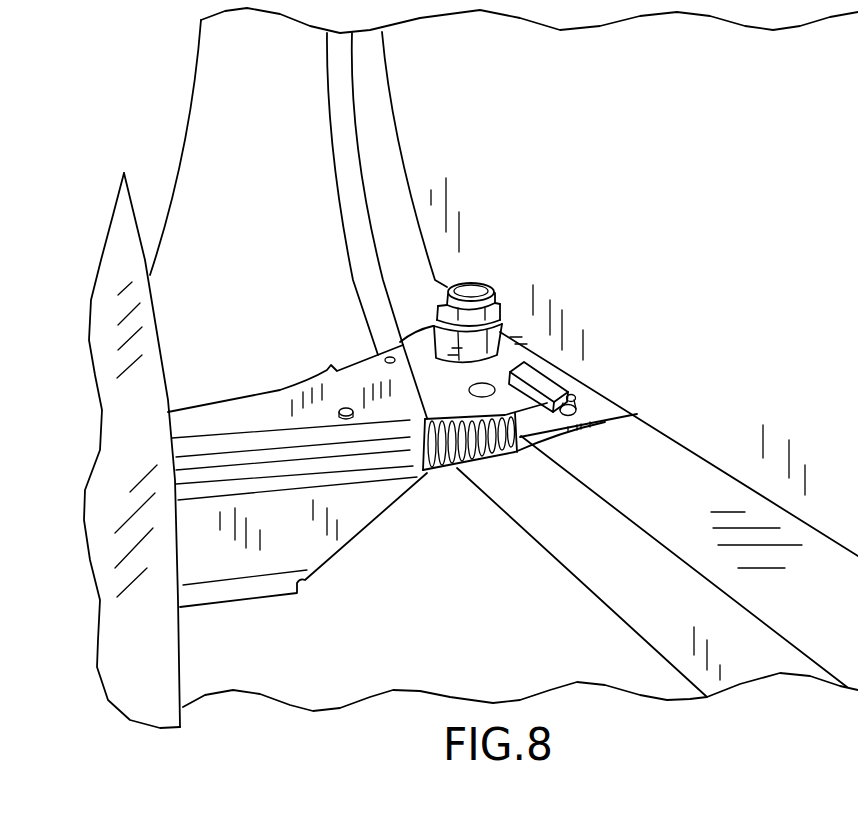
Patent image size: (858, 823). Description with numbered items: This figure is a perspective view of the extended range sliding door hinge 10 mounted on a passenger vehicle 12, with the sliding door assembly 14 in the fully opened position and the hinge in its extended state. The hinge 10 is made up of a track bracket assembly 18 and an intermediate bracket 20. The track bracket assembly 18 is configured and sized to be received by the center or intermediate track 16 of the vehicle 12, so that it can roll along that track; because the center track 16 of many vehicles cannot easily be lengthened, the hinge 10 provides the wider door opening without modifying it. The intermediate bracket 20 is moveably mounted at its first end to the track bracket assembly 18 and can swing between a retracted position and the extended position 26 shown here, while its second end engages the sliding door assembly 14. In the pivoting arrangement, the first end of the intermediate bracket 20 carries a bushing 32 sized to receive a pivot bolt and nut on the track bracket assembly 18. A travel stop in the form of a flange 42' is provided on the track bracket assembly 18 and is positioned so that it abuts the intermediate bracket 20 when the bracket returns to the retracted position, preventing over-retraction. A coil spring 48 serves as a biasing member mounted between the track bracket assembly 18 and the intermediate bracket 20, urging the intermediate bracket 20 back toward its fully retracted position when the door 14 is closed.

The extended range sliding door hinge 10 is at (306, 308).
The passenger vehicle 12 is at (500, 632).
The sliding door assembly 14 is at (162, 293).
The center or intermediate track 16 is at (690, 584).
The track bracket assembly 18 is at (546, 461).
The intermediate bracket 20 is at (362, 553).
The extended position 26 is at (429, 508).
The bushing 32 is at (437, 333).
The flange 42' is at (536, 437).
The coil spring 48 is at (447, 470).